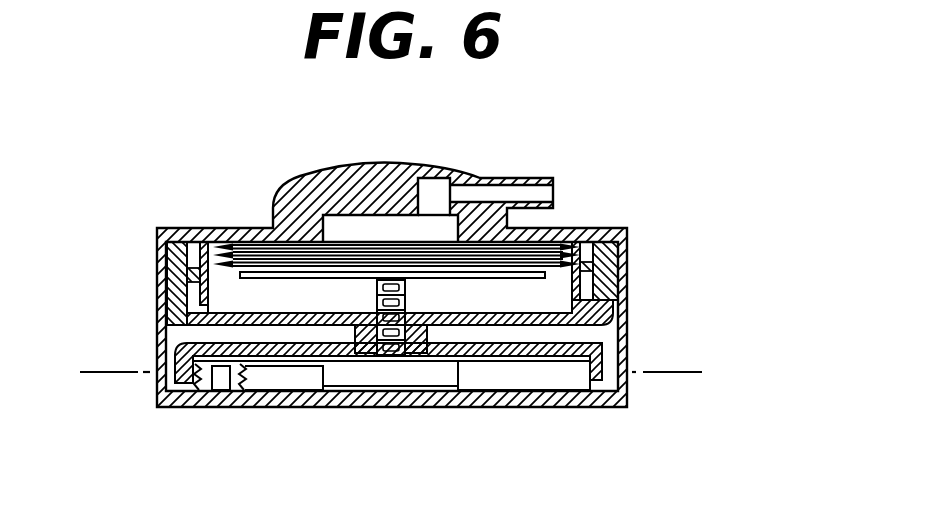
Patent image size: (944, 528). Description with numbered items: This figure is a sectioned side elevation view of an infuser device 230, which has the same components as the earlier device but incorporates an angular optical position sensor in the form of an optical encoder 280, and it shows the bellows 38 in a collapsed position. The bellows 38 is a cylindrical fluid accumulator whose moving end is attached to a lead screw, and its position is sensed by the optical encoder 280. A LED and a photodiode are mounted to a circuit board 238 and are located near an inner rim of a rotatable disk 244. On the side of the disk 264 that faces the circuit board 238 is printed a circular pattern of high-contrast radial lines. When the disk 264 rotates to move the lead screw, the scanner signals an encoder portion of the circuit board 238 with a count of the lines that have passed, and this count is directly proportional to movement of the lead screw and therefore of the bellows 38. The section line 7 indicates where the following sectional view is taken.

The infuser device 230 is at (428, 314).
The circuit board 238 is at (158, 398).
The bellows fluid accumulator 38 is at (565, 263).
The rotatable disk 244 is at (407, 292).
The disk 264 is at (185, 343).
The optical encoder 280 is at (220, 383).
The section line 7- 7 is at (92, 372).